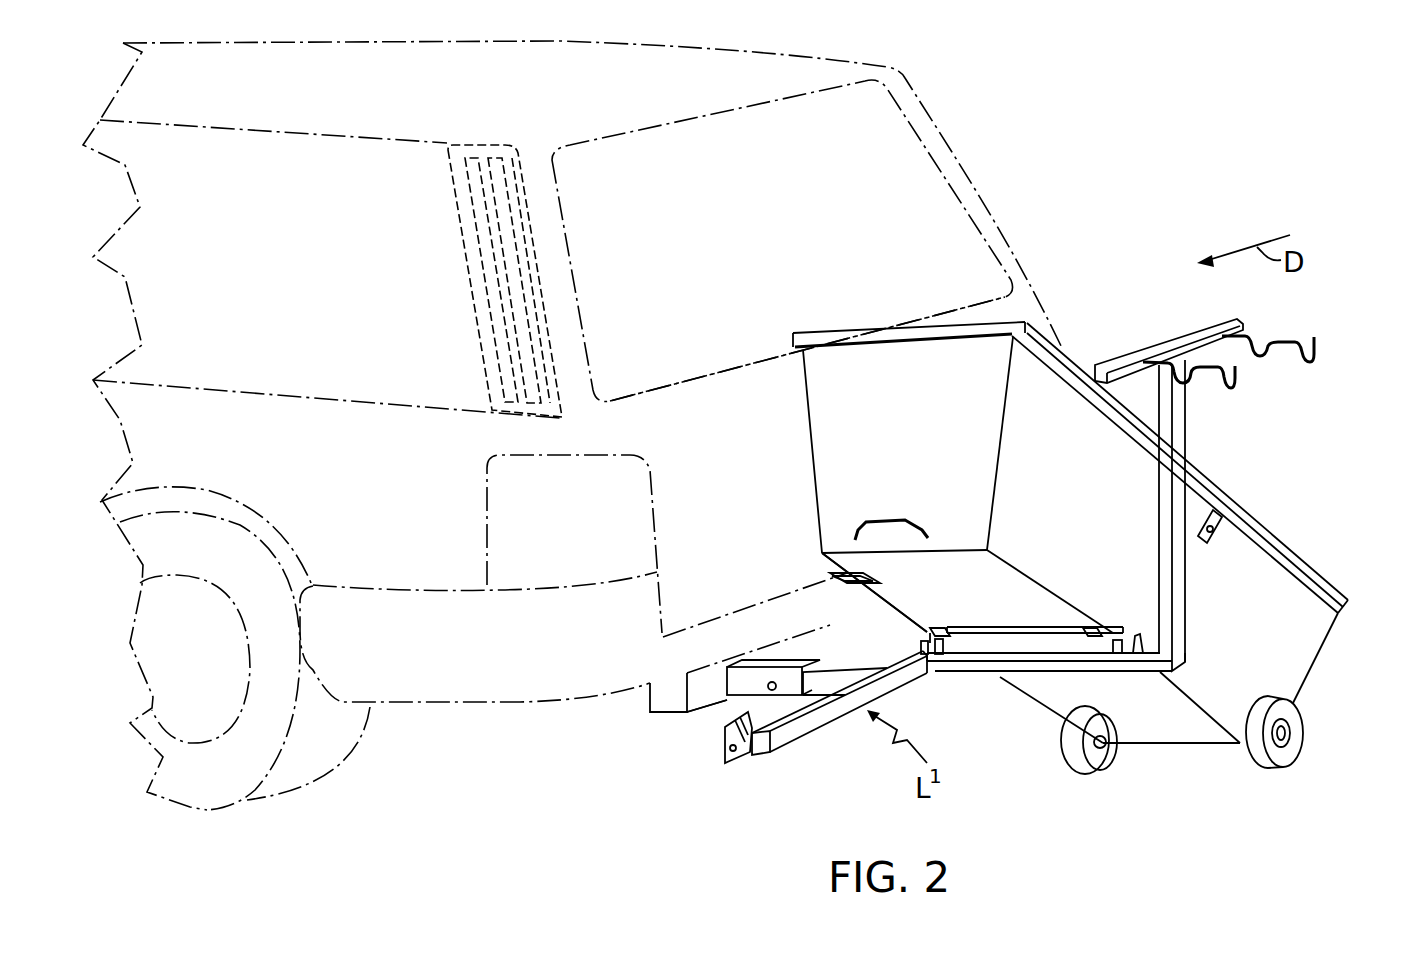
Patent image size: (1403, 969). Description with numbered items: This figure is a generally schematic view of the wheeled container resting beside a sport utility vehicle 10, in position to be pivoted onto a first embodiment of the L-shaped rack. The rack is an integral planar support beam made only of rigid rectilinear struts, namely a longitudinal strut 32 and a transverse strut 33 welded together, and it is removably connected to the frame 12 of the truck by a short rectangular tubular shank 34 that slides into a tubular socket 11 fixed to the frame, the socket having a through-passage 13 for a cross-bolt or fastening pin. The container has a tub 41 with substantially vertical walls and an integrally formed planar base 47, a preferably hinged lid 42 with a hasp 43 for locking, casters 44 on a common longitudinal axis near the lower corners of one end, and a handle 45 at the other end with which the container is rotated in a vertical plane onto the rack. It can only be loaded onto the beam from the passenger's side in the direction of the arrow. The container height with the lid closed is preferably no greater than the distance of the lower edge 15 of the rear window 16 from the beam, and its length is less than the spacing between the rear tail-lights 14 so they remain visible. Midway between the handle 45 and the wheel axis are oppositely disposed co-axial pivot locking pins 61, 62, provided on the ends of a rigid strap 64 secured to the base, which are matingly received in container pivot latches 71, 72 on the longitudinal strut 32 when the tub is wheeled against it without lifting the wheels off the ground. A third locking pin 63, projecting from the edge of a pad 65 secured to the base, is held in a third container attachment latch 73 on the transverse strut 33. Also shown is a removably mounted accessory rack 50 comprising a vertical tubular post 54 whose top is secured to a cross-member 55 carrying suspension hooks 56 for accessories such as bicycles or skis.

The sport utility vehicle 10 is at (1018, 165).
The tubular socket 11 is at (712, 711).
The frame 12 is at (663, 695).
The through-passage 13 is at (767, 687).
The rear tail-light 14 is at (490, 513).
The lower edge of rear window 15 is at (713, 378).
The rear window 16 is at (759, 205).
The longitudinal strut 32 is at (1117, 665).
The transverse strut 33 is at (830, 730).
The shank 34 is at (838, 665).
The tub 41 is at (1313, 668).
The lid 42 is at (1303, 548).
The hasp 43 is at (1218, 537).
The casters 44 is at (1103, 757).
The handle 45 is at (880, 518).
The planar base 47 is at (1060, 713).
The accessory rack 50 is at (1148, 503).
The vertical tubular post 54 is at (1185, 587).
The cross-member 55 is at (1210, 330).
The suspension hooks 56 is at (1231, 388).
The pivot locking pin 61 is at (1117, 632).
The pivot locking pin 62 is at (925, 632).
The third locking pin 63 is at (830, 573).
The rigid strap 64 is at (1040, 637).
The pad 65 is at (878, 580).
The container pivot latch 71 is at (1136, 632).
The container pivot latch 72 is at (947, 665).
The third container attachment latch 73 is at (727, 764).